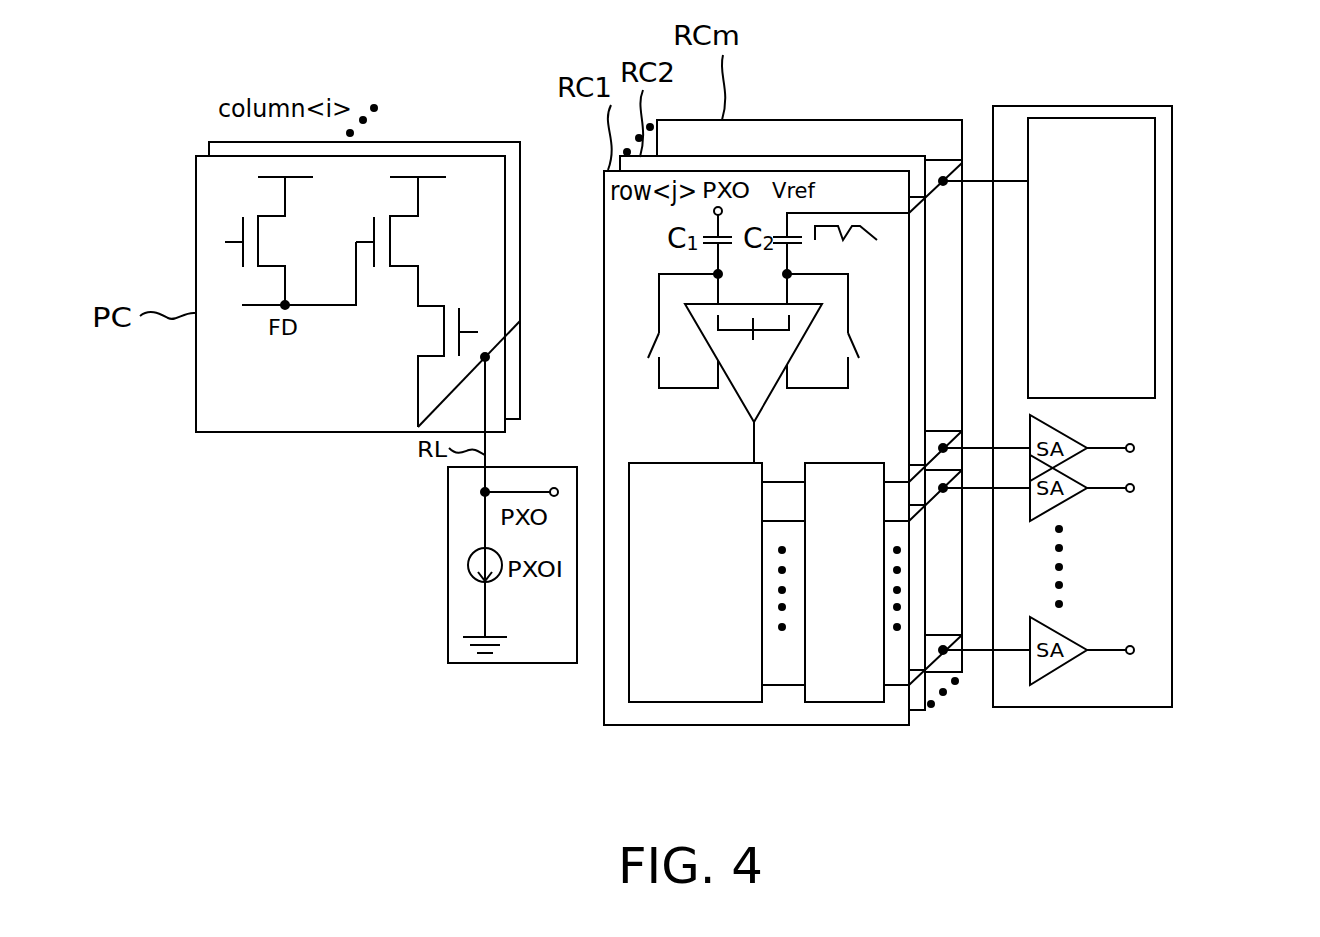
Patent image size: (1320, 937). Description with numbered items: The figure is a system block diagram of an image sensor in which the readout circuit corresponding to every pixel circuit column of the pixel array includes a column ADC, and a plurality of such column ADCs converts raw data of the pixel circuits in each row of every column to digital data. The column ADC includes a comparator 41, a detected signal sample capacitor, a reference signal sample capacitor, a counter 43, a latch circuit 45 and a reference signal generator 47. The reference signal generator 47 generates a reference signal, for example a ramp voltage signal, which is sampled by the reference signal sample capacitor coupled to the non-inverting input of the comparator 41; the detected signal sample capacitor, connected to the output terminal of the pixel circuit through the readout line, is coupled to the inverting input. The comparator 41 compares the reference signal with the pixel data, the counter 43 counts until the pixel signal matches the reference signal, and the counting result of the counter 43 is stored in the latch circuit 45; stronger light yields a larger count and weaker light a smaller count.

The comparator 41 is at (747, 410).
The counter 43 is at (660, 703).
The latch circuit 45 is at (842, 703).
The reference signal generator 47 is at (1155, 262).